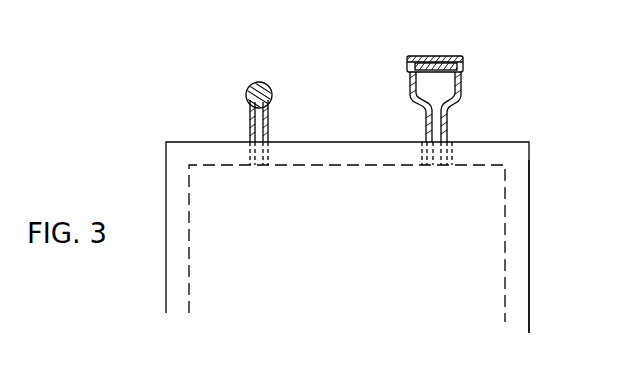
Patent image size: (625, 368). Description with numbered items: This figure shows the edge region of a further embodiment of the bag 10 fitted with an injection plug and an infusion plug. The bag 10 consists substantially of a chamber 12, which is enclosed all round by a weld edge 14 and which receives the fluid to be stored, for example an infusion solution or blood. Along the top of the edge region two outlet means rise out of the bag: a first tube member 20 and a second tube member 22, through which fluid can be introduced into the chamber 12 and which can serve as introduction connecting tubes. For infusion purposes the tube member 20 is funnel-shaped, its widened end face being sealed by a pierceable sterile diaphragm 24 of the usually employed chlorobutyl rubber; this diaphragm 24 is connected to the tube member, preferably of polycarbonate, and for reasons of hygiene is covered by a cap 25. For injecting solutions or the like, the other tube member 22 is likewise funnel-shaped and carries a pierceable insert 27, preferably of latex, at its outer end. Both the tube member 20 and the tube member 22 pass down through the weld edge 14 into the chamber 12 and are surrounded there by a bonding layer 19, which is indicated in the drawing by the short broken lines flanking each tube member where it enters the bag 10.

The bag 10 is at (542, 253).
The chamber 12 is at (496, 193).
The weld edge 14 is at (520, 219).
The bonding layer 19 is at (248, 141).
The tube member 20 is at (439, 80).
The tube member 22 is at (257, 106).
The pierceable sterile diaphragm 24 is at (463, 73).
The cap 25 is at (438, 57).
The pierceable insert 27 is at (270, 84).